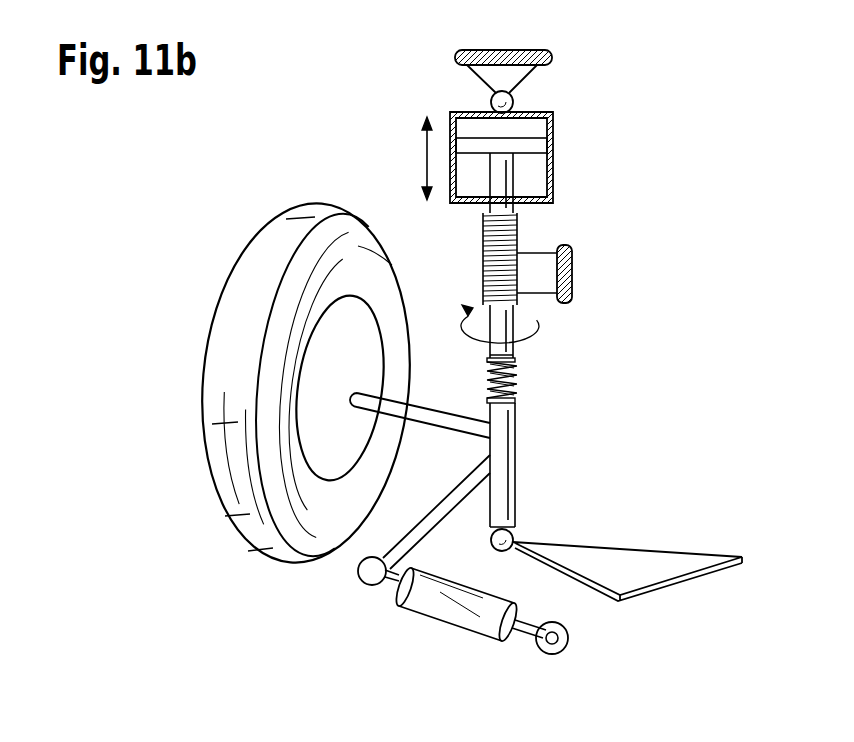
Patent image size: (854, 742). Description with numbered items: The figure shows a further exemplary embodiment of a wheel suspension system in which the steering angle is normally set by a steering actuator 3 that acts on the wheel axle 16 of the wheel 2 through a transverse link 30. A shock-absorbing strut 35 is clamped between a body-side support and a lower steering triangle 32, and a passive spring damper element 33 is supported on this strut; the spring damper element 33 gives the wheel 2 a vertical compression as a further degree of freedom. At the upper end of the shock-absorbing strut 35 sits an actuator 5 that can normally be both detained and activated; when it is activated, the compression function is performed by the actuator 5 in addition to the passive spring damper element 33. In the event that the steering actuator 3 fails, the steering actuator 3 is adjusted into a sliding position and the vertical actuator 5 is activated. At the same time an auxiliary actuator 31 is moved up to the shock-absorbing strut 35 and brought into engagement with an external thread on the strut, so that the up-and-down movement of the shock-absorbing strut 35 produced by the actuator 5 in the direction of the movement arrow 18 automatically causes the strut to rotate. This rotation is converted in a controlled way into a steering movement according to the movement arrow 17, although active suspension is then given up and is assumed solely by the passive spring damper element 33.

The wheel 2 is at (268, 245).
The steering actuator 3 is at (455, 597).
The actuator 5 is at (553, 163).
The wheel axle 16 is at (443, 418).
The movement arrow 17 is at (530, 340).
The movement arrow 18 is at (427, 152).
The transverse link 30 is at (408, 543).
The auxiliary actuator 31 is at (535, 268).
The lower steering triangle 32 is at (615, 558).
The passive spring damper element 33 is at (518, 400).
The shock-absorbing strut 35 is at (488, 212).